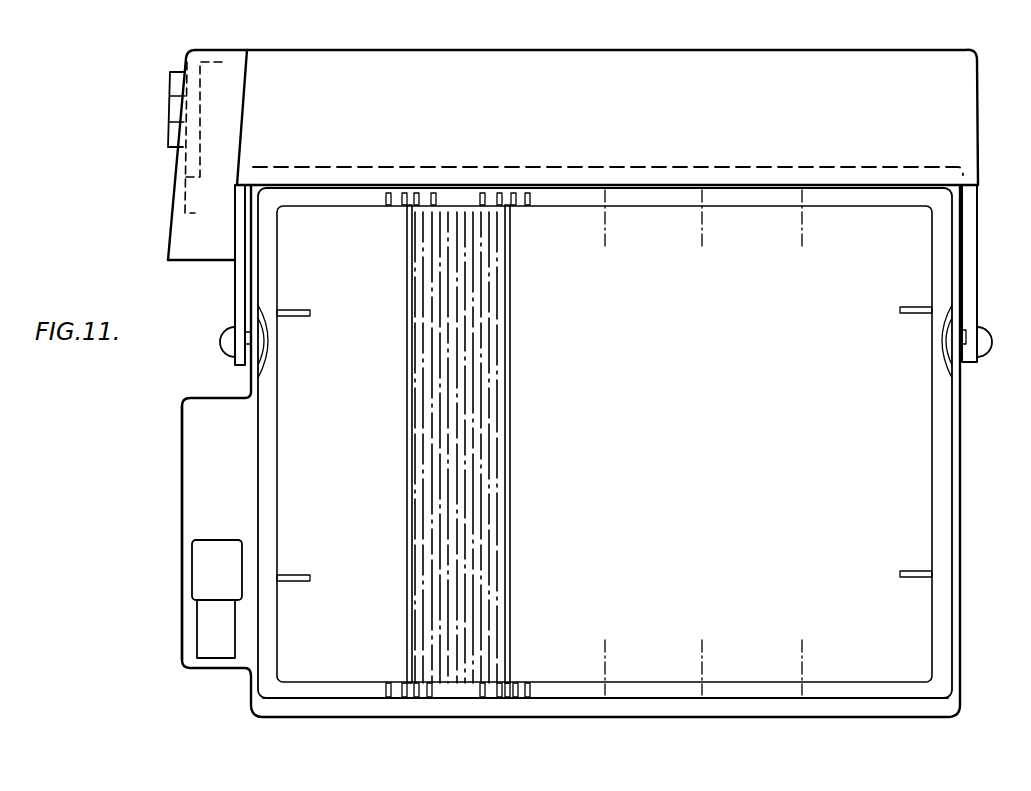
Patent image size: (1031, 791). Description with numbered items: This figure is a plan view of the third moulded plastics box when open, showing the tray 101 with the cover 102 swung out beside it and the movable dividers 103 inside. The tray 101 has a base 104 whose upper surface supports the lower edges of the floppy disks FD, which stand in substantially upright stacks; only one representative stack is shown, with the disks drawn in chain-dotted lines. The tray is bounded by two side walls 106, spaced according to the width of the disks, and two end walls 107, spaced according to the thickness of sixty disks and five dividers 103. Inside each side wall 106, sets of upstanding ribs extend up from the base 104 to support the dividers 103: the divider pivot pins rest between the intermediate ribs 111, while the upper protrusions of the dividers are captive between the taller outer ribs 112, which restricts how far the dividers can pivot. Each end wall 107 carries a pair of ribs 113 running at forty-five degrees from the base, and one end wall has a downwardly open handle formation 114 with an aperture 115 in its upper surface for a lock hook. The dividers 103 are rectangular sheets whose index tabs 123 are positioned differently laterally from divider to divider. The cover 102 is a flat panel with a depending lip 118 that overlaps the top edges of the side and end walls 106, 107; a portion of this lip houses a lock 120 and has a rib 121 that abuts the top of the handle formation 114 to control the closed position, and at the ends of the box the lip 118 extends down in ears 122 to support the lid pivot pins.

The tray 101 is at (822, 721).
The cover 102 is at (275, 47).
The movable dividers 103 is at (406, 448).
The base 104 is at (870, 613).
The side walls 106 is at (627, 712).
The end walls 107 is at (248, 385).
The intermediate ribs 111 is at (493, 697).
The outer ribs 112 is at (387, 697).
The ribs 113 is at (292, 313).
The handle formation 114 is at (200, 487).
The aperture 115 is at (215, 633).
The lip 118 is at (875, 90).
The lock 120 is at (170, 116).
The rib 121 is at (185, 185).
The ears 122 is at (240, 287).
The index tabs 123 is at (408, 244).
The floppy disks FD is at (478, 232).